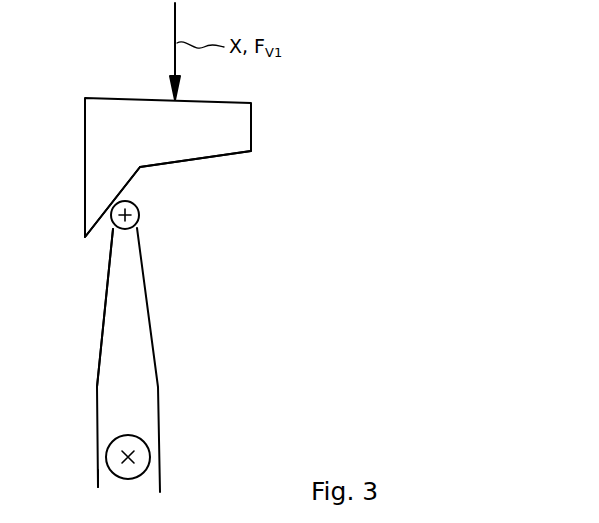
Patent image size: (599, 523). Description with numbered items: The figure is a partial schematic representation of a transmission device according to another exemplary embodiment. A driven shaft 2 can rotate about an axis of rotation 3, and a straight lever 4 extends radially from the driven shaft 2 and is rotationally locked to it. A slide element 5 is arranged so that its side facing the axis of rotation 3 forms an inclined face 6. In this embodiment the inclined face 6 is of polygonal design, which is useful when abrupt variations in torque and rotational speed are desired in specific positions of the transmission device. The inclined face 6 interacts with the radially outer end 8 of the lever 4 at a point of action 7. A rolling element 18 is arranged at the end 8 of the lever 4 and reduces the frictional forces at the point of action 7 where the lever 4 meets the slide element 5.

The driven shaft 2 is at (108, 462).
The axis of rotation 3 is at (140, 444).
The lever 4 is at (110, 367).
The slide element 5 is at (112, 120).
The inclined face 6 is at (207, 160).
The point of action 7 is at (112, 204).
The radially outer end 8 is at (120, 243).
The rolling element 18 is at (139, 219).